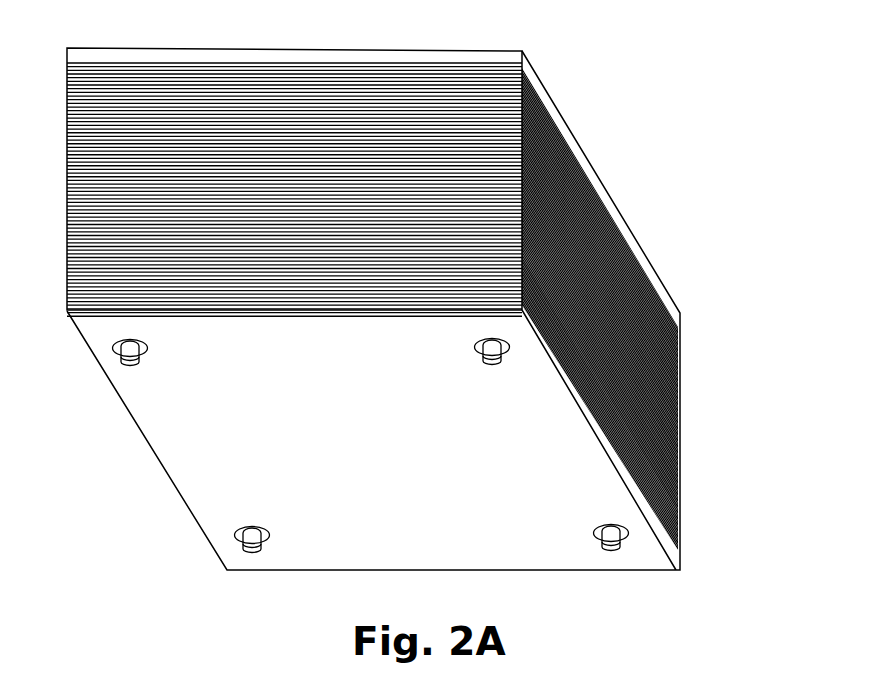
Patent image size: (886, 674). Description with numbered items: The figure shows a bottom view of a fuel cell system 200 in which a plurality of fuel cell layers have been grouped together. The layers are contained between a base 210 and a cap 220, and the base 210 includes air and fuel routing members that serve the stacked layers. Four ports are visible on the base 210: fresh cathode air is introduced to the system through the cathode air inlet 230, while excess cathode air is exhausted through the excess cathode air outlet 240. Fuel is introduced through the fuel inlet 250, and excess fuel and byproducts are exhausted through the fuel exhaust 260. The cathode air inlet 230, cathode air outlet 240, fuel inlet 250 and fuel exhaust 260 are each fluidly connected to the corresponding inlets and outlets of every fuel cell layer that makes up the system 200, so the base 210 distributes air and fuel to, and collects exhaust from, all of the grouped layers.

The fuel cell system 200 is at (692, 140).
The base 210 is at (374, 428).
The cap 220 is at (523, 57).
The cathode air inlet 230 is at (252, 553).
The excess cathode air outlet 240 is at (493, 363).
The fuel inlet 250 is at (612, 548).
The fuel exhaust 260 is at (130, 365).